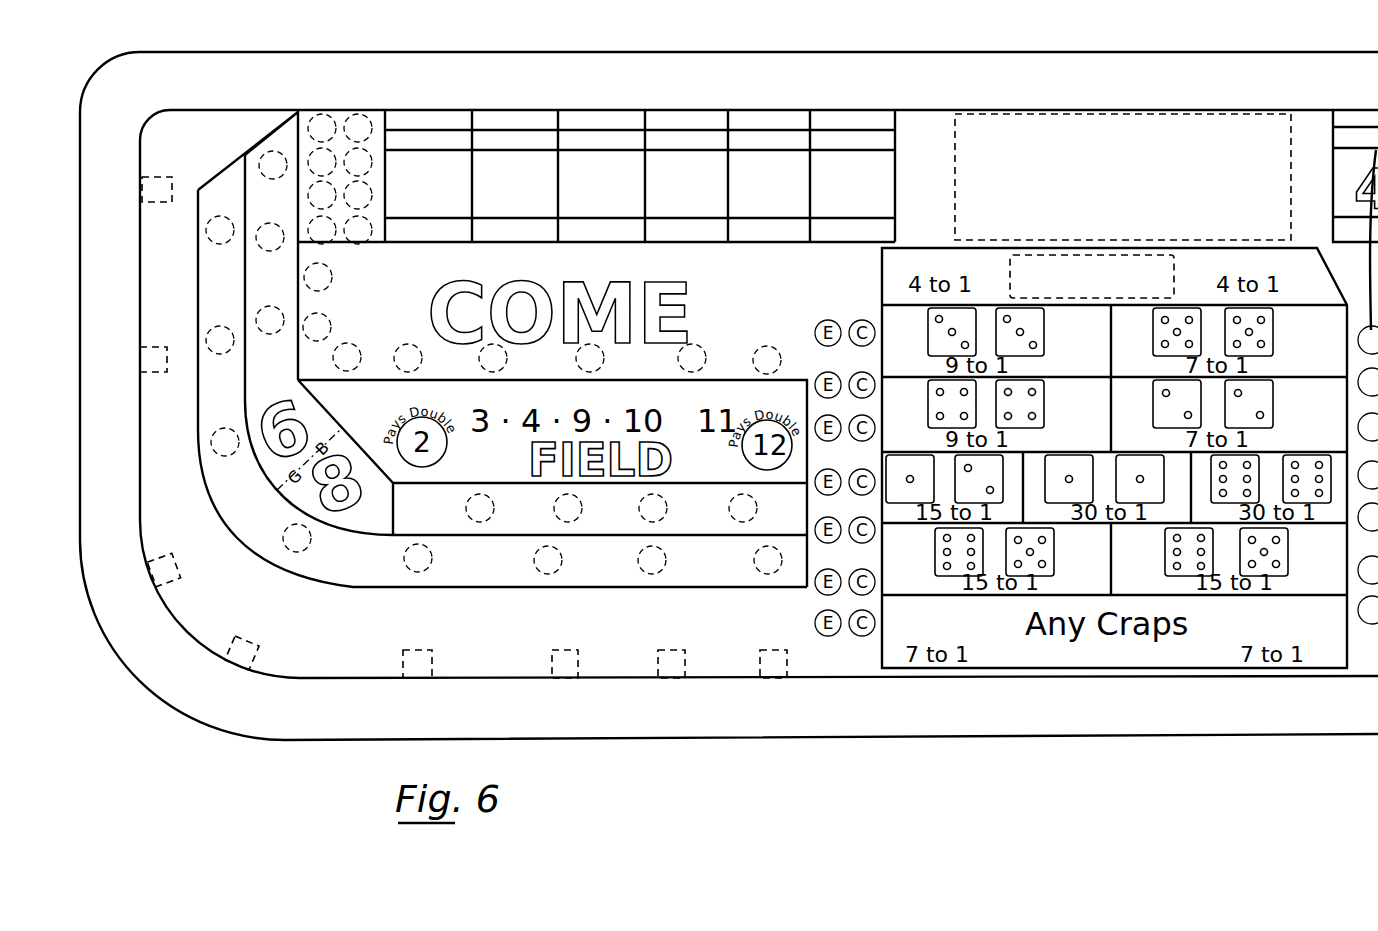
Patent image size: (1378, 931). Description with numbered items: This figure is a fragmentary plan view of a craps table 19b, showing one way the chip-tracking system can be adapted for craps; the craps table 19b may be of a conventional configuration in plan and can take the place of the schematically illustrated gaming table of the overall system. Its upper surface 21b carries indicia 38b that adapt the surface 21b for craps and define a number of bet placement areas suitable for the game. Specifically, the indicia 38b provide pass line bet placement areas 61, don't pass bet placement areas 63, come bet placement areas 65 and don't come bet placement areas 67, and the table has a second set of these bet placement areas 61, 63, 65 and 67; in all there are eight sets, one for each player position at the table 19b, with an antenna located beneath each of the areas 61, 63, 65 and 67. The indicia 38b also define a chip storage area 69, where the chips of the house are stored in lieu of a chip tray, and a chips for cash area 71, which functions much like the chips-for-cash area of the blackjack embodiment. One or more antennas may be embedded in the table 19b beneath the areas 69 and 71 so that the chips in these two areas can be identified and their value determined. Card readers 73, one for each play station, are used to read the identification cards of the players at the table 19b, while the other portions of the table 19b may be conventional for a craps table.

The craps table 19b is at (563, 52).
The upper surface 21b is at (660, 68).
The indicia 38b is at (759, 155).
The pass line bet placement areas 61 is at (223, 326).
The don't pass bet placement areas 63 is at (268, 224).
The come bet placement areas 65 is at (394, 360).
The don't come bet placement areas 67 is at (321, 148).
The chip storage area 69 is at (1013, 135).
The chips for cash area 71 is at (1108, 270).
The card readers 73 is at (685, 665).